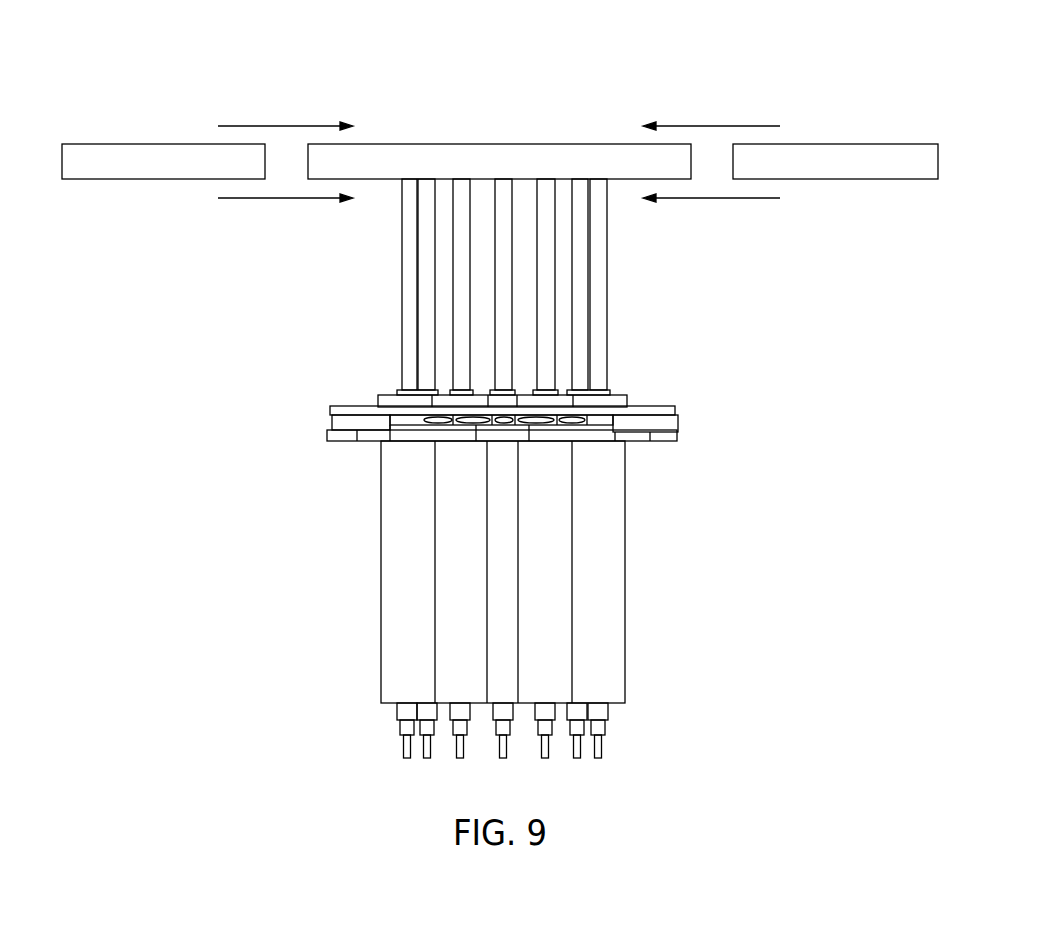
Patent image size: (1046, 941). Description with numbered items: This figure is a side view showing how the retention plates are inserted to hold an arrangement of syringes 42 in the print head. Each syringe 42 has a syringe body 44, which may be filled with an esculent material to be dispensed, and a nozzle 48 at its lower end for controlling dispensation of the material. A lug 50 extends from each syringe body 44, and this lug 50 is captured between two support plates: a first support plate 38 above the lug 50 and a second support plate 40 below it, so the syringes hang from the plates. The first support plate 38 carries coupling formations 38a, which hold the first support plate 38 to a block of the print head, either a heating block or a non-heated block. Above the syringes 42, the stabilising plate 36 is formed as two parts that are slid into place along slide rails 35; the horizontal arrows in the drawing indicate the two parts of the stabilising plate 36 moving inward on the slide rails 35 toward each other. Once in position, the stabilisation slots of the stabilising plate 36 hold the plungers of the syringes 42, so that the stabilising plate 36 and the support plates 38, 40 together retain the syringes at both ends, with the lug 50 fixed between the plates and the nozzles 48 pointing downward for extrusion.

The slide rails 35 is at (502, 157).
The stabilising plate 36 is at (157, 158).
The first support plate 38 is at (648, 407).
The coupling formations 38a is at (672, 420).
The second support plate 40 is at (663, 443).
The syringe 42 is at (338, 485).
The syringe body 44 is at (382, 608).
The nozzle 48 is at (405, 708).
The lug 50 is at (435, 388).